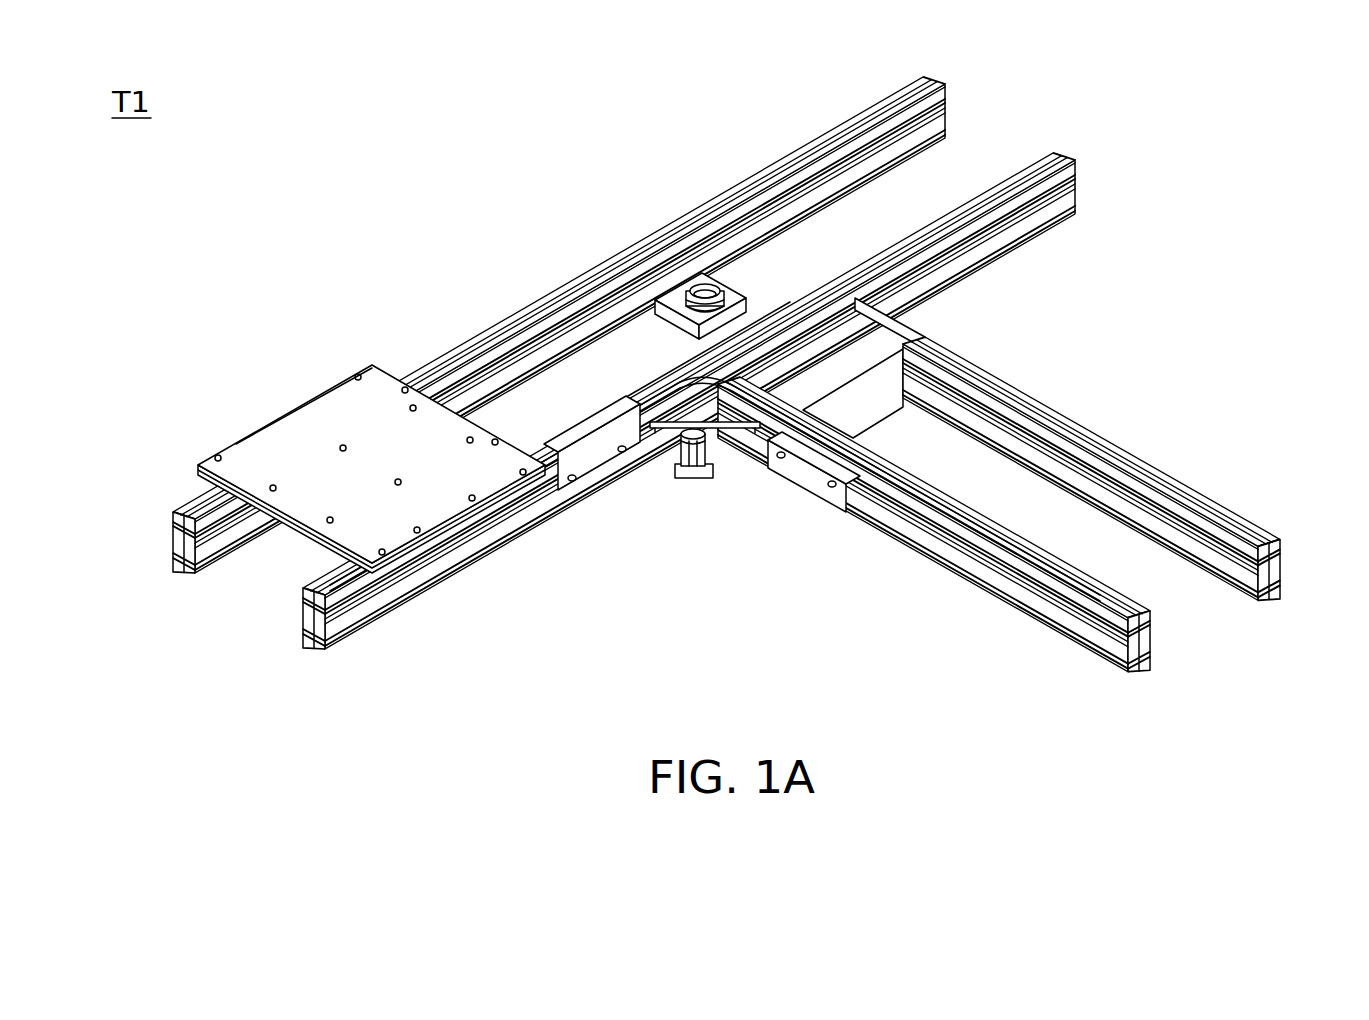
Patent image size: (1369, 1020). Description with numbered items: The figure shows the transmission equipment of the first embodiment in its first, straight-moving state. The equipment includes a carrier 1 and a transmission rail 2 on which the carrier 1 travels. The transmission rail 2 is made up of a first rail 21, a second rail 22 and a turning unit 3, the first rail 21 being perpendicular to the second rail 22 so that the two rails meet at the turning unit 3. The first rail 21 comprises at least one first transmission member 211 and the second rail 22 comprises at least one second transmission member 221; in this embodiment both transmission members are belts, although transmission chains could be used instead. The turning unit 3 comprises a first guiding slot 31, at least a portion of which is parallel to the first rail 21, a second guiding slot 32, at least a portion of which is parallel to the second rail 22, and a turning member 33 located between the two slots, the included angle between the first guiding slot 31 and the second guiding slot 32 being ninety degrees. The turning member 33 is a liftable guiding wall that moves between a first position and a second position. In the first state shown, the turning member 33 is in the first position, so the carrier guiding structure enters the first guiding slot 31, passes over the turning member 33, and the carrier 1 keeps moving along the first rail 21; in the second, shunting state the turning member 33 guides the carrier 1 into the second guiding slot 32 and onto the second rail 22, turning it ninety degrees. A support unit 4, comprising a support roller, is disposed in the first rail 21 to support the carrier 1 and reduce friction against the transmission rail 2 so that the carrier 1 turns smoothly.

The carrier 1 is at (345, 415).
The transmission rail 2 is at (722, 379).
The first rail 21 is at (590, 363).
The first transmission member 211 is at (200, 506).
The second rail 22 is at (1029, 496).
The second transmission member 221 is at (1103, 595).
The turning unit 3 is at (715, 506).
The first guiding slot 31 is at (610, 455).
The second guiding slot 32 is at (814, 511).
The turning member 33 is at (690, 400).
The support unit 4 is at (706, 290).